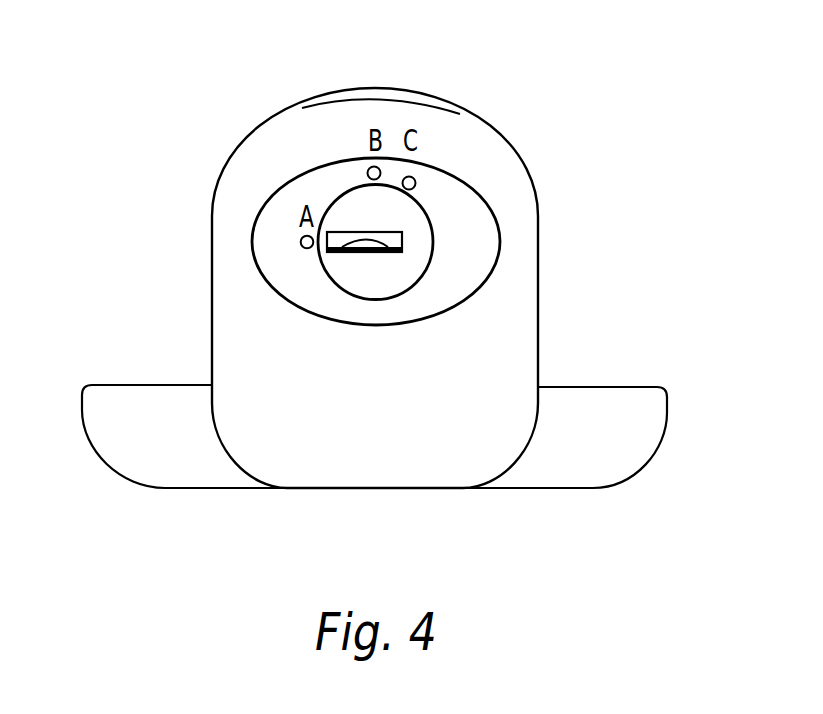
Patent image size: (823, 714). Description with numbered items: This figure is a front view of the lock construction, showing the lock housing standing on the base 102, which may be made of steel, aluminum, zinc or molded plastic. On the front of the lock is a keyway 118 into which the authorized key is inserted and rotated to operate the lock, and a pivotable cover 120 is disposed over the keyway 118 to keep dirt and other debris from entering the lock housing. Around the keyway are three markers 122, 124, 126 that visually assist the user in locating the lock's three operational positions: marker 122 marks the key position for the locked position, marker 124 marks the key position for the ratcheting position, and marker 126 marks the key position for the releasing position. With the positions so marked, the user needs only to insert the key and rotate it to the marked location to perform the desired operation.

The base 102 is at (620, 445).
The keyway 118 is at (368, 252).
The pivotable cover 120 is at (338, 237).
The marker 122 is at (300, 242).
The marker 124 is at (367, 173).
The marker 126 is at (416, 182).